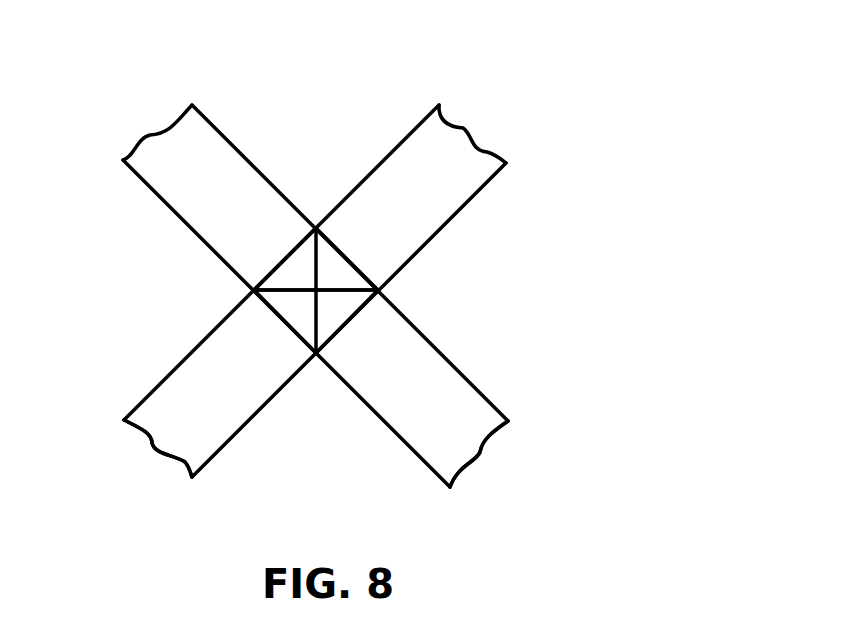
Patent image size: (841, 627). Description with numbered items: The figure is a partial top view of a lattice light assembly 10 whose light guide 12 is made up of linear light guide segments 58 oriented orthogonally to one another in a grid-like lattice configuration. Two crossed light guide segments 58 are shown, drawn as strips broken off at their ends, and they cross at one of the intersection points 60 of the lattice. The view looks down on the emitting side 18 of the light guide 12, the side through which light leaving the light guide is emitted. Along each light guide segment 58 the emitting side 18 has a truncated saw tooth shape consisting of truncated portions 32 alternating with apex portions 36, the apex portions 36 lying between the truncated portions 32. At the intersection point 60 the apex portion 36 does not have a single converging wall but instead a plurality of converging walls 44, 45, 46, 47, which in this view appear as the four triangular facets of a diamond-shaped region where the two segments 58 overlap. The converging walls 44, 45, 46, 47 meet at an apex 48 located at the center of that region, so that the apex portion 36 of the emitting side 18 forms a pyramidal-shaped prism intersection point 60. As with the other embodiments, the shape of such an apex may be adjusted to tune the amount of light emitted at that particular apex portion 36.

The light assembly 10 is at (522, 77).
The light guide 12 is at (595, 118).
The emitting side 18 is at (168, 389).
The truncated portions 32 is at (460, 155).
The apex portions 36 is at (301, 254).
The converging wall 44 is at (282, 281).
The converging wall 45 is at (329, 255).
The converging wall 46 is at (347, 309).
The converging wall 47 is at (302, 326).
The apex 48 is at (316, 290).
The light guide segments 58 is at (151, 425).
The intersection points 60 is at (316, 290).